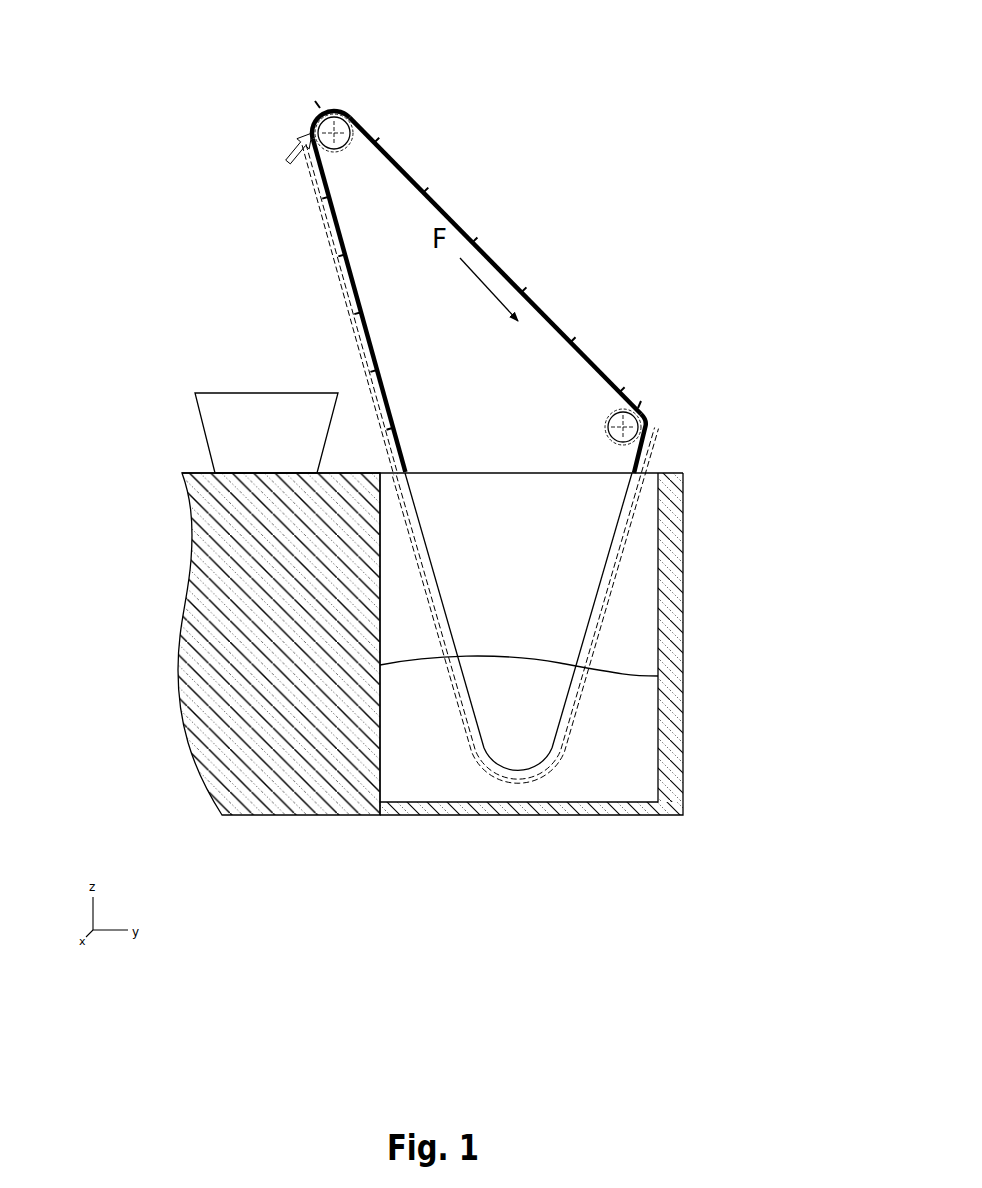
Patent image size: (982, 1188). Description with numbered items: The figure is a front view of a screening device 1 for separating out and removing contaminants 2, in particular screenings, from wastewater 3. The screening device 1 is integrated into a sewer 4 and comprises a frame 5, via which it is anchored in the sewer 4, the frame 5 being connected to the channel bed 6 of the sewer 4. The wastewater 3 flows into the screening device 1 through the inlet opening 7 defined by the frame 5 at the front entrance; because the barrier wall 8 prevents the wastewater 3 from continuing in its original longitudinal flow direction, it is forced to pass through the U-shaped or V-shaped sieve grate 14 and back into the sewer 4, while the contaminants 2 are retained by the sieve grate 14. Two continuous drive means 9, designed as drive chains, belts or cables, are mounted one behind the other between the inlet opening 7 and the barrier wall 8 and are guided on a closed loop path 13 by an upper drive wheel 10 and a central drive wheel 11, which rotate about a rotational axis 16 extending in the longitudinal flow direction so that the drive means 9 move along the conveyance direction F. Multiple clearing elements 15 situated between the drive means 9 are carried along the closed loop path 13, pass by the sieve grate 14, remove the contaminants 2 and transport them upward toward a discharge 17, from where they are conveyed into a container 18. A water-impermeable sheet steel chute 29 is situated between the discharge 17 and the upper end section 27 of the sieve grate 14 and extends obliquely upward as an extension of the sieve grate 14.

The screening device 1 is at (179, 114).
The contaminants 2 is at (280, 305).
The wastewater 3 is at (565, 734).
The sewer 4 is at (578, 644).
The frame 5 is at (439, 700).
The channel bed 6 is at (531, 857).
The inlet opening 7 is at (518, 834).
The barrier wall 8 is at (546, 701).
The continuous drive means 9 is at (479, 292).
The upper drive wheel 10 is at (336, 113).
The central drive wheel 11 is at (665, 379).
The closed loop path 13 is at (499, 242).
The sieve grate 14 is at (597, 603).
The clearing elements 15 is at (495, 266).
The rotational axis 16 is at (493, 226).
The discharge 17 is at (270, 82).
The container 18 is at (206, 431).
The upper end section of the sieve grate 27 is at (519, 438).
The sheet steel chute 29 is at (280, 309).